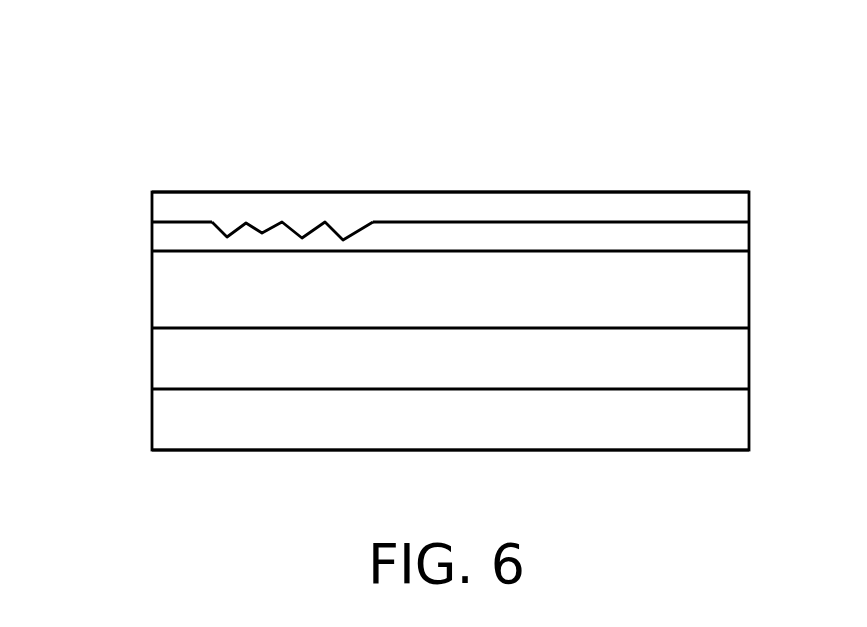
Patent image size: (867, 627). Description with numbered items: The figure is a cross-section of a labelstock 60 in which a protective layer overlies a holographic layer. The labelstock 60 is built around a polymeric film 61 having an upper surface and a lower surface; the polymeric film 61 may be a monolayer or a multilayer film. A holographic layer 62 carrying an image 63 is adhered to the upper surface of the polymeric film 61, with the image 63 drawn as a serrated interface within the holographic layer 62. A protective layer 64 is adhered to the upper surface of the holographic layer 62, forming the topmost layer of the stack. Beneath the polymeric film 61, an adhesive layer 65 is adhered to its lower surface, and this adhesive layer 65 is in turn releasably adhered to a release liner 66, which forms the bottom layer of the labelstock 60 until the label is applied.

The labelstock 60 is at (648, 151).
The polymeric film 61 is at (718, 296).
The holographic layer 62 is at (718, 234).
The image 63 is at (283, 230).
The protective layer 64 is at (703, 204).
The adhesive layer 65 is at (733, 357).
The release liner 66 is at (718, 418).